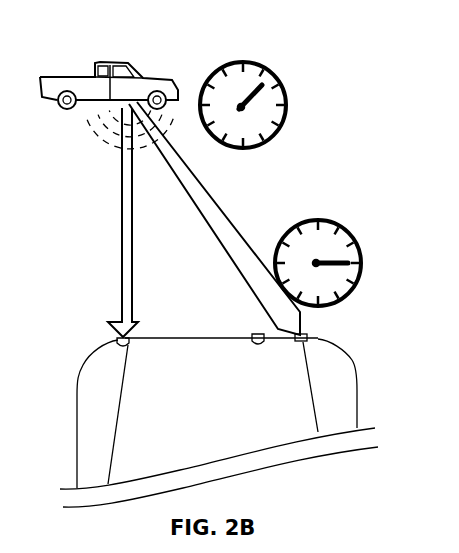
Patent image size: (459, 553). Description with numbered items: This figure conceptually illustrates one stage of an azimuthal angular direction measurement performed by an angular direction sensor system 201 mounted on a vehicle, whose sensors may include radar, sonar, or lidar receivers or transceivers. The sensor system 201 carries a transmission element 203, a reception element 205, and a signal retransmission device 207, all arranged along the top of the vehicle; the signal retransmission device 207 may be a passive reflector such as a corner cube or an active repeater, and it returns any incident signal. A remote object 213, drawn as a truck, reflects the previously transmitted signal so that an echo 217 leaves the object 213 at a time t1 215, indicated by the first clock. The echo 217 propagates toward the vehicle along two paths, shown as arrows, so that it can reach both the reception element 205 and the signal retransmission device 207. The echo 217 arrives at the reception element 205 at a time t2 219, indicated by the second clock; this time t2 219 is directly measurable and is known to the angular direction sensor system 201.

The angular direction sensor system 201 is at (83, 327).
The transmission element 203 is at (262, 348).
The reception element 205 is at (307, 335).
The signal retransmission device 207 is at (133, 343).
The object 213 is at (147, 73).
The time t1 215 is at (287, 92).
The echo 217 is at (90, 133).
The time t2 219 is at (362, 245).